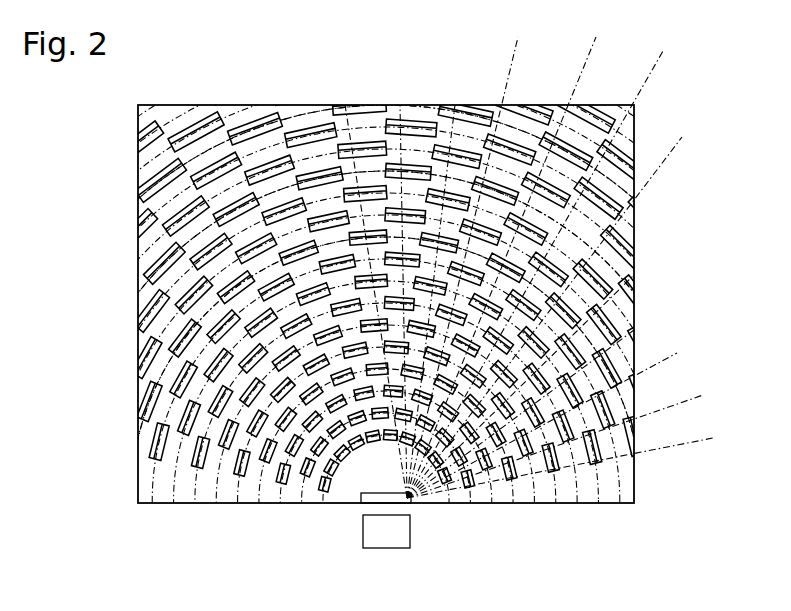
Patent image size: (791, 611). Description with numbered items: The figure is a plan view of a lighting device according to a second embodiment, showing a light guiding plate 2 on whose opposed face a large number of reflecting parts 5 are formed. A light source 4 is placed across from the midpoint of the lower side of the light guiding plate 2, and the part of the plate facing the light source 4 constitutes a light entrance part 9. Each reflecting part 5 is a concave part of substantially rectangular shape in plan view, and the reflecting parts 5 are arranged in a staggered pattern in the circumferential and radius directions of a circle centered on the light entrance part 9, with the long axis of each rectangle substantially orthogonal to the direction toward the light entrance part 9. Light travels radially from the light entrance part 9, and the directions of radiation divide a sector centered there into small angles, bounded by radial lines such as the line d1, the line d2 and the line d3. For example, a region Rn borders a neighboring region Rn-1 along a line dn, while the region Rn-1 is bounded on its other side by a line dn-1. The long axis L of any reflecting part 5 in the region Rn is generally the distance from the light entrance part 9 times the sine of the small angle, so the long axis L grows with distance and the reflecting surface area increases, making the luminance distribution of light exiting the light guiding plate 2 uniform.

The light guiding plate 2 is at (634, 478).
The light source 4 is at (410, 538).
The reflecting part 5 is at (568, 218).
The light entrance part 9 is at (412, 498).
The long axis L is at (541, 176).
The line d1 is at (575, 465).
The line d2 is at (570, 442).
The line d3 is at (560, 421).
The line dn-1 is at (579, 311).
The line dn is at (552, 273).
The region Rn-1 is at (533, 268).
The region Rn is at (527, 205).